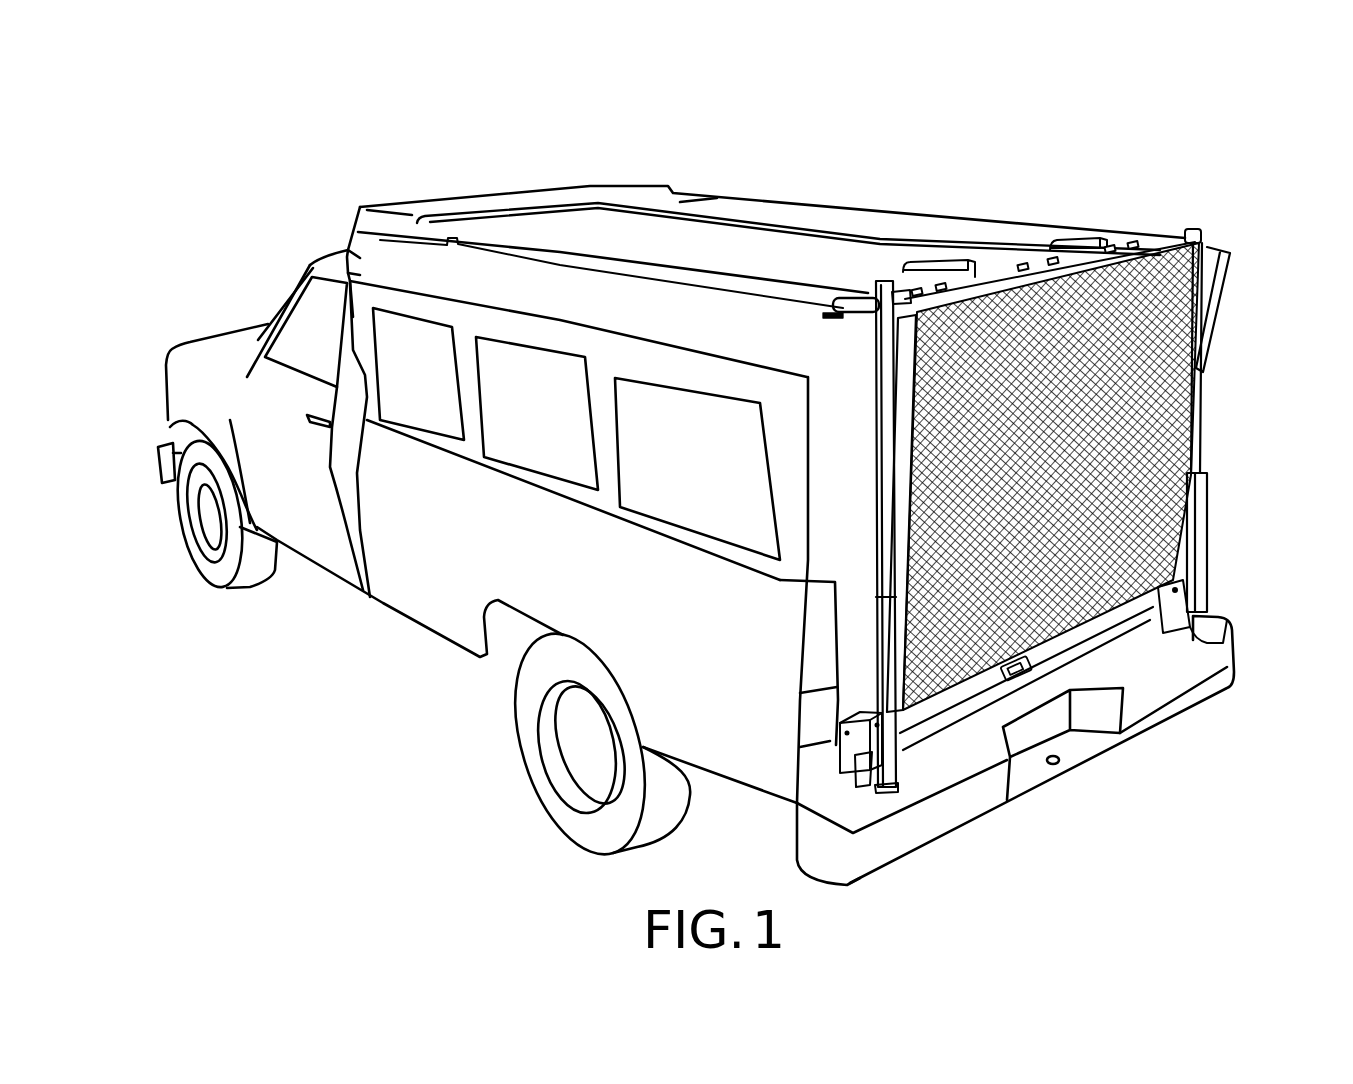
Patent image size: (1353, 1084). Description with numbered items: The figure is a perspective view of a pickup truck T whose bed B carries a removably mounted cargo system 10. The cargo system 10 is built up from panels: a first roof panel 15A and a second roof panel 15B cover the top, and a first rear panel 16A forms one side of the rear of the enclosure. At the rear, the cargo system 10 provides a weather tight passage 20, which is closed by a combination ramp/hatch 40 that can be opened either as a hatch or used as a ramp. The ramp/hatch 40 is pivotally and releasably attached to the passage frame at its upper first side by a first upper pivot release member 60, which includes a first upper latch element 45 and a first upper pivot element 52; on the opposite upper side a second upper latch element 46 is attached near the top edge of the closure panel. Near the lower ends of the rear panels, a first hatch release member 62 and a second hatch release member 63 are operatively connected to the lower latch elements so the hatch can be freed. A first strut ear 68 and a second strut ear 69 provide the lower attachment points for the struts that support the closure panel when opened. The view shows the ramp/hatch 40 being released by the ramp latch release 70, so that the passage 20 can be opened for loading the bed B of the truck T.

The cargo system 10 is at (1024, 192).
The first roof panel 15A is at (708, 263).
The second roof panel 15B is at (790, 218).
The first rear panel 16A is at (832, 375).
The weather tight passage 20 is at (1116, 218).
The combination ramp/hatch 40 is at (1202, 407).
The first upper latch element 45 is at (893, 296).
The second upper latch element 46 is at (1199, 231).
The first upper pivot element 52 is at (835, 298).
The first upper pivot release member 60 is at (884, 285).
The first hatch release member 62 is at (857, 782).
The second hatch release member 63 is at (1185, 582).
The first strut ear 68 is at (875, 790).
The second strut ear 69 is at (1196, 627).
The ramp latch release 70 is at (1023, 672).
The pickup truck T is at (200, 357).
The bed B is at (452, 602).